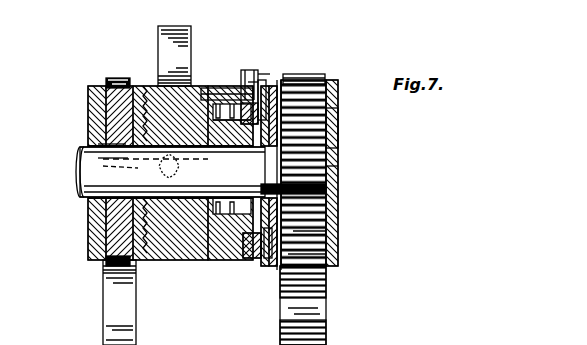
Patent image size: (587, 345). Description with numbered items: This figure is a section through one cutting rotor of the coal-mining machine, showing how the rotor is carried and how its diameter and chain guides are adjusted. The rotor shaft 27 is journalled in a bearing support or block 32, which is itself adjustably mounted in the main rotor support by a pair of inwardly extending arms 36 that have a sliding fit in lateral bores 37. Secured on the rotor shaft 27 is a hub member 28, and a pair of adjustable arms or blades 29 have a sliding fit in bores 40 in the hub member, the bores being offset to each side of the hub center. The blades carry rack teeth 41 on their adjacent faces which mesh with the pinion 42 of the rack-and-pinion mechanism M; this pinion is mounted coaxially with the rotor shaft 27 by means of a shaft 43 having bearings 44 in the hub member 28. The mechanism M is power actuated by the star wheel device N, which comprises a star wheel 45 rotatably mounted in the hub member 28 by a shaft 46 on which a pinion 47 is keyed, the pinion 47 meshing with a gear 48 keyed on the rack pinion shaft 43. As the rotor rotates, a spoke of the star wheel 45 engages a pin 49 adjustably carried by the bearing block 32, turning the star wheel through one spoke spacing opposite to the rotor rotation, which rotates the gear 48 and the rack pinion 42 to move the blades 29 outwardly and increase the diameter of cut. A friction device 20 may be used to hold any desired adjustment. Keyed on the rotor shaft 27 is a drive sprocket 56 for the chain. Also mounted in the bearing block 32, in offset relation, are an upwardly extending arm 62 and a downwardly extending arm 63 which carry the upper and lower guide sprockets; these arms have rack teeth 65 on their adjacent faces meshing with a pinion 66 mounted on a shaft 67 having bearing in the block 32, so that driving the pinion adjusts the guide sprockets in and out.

The friction device 20 is at (248, 63).
The rotor shaft 27 is at (70, 170).
The hub member 28 is at (330, 223).
The adjustable arms or blades 29 is at (318, 307).
The bearing support or block 32 is at (148, 258).
The inwardly extending arms 36 is at (92, 94).
The lateral bores 37 is at (86, 108).
The bores 40 is at (330, 243).
The rack teeth 41 is at (296, 68).
The pinion 42 is at (300, 197).
The shaft 43 is at (322, 150).
The bearings 44 is at (240, 228).
The star wheel 45 is at (236, 59).
The shaft 46 is at (282, 66).
The pinion 47 is at (256, 73).
The gear 48 is at (258, 252).
The pin 49 is at (214, 77).
The drive sprockets 56 is at (216, 212).
The upwardly extending arms 62 is at (150, 22).
The downwardly extending arms 63 is at (96, 305).
The rack teeth 65 is at (150, 70).
The pinion 66 is at (82, 136).
The shaft 67 is at (76, 149).
The rack-and-pinion mechanism M is at (337, 165).
The star wheel device N is at (240, 69).